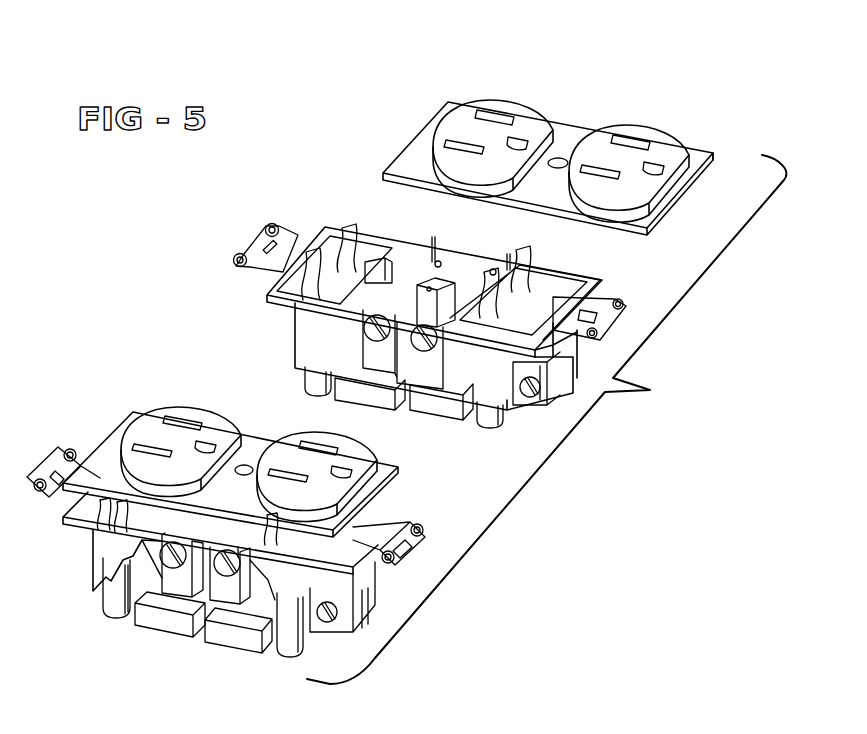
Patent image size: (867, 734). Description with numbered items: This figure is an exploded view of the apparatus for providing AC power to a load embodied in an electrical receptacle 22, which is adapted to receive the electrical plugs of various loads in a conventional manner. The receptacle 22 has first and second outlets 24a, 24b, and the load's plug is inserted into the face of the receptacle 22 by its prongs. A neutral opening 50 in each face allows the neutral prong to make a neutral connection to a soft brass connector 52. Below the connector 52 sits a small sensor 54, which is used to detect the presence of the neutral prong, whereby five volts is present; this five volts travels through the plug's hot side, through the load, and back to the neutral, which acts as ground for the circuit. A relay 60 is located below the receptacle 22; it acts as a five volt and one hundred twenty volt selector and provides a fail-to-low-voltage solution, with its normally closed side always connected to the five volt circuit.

The electrical receptacle 22 is at (546, 419).
The first outlet 24a is at (503, 84).
The second outlet 24b is at (660, 114).
The neutral opening 50 is at (465, 138).
The soft brass connector 52 is at (308, 268).
The sensor 54 is at (304, 383).
The relay 60 is at (366, 405).